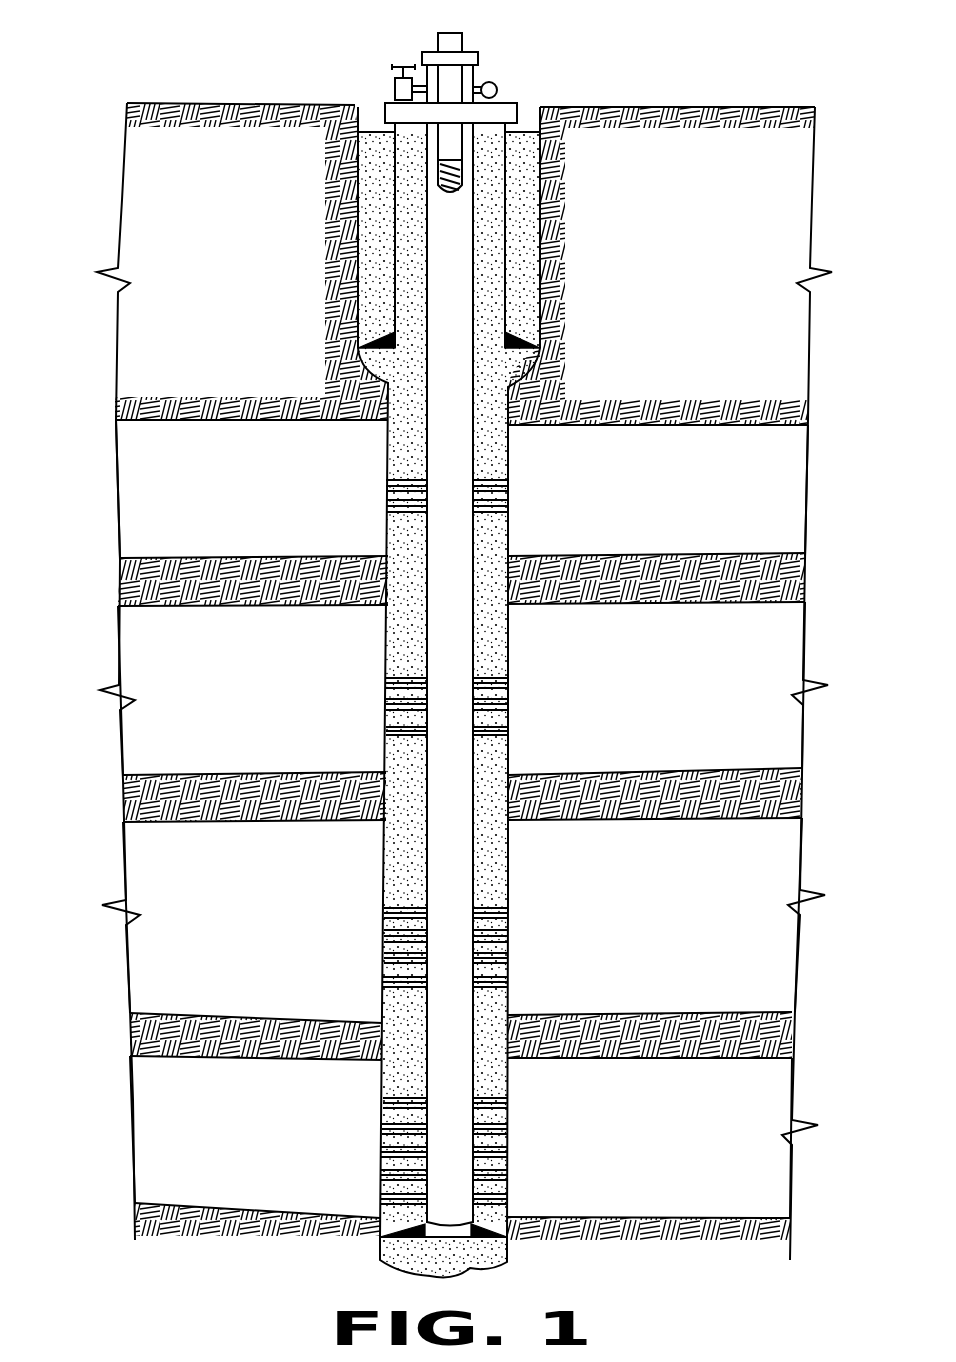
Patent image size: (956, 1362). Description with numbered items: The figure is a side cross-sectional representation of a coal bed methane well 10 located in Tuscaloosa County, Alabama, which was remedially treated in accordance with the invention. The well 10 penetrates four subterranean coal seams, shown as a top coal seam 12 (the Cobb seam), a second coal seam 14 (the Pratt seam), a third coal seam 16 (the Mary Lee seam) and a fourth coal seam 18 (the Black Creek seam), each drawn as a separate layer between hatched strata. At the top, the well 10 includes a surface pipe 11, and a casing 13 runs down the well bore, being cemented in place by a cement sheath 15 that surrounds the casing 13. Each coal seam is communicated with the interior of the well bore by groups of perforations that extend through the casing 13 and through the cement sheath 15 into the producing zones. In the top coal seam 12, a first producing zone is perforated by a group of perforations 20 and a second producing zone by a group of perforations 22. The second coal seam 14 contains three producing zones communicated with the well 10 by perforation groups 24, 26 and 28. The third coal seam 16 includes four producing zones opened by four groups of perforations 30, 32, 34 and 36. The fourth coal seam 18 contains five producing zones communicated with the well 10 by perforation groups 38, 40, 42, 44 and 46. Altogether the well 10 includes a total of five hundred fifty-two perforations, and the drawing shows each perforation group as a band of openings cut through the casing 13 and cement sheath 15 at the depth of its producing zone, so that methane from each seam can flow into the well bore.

The well 10 is at (483, 52).
The surface pipe 11 is at (500, 232).
The casing 13 is at (480, 398).
The cement sheath 15 is at (525, 175).
The top coal seam 12 is at (150, 478).
The second coal seam 14 is at (162, 668).
The third coal seam 16 is at (165, 898).
The fourth coal seam 18 is at (165, 1148).
The perforations 20 is at (388, 483).
The perforations 22 is at (388, 505).
The perforation group 24 is at (385, 680).
The perforation group 26 is at (385, 703).
The perforation group 28 is at (385, 730).
The perforations 30 is at (385, 912).
The perforations 32 is at (385, 935).
The perforations 34 is at (385, 957).
The perforations 36 is at (385, 982).
The perforations 38 is at (383, 1100).
The perforations 40 is at (383, 1127).
The perforations 42 is at (381, 1151).
The perforations 44 is at (381, 1175).
The perforations 46 is at (380, 1200).